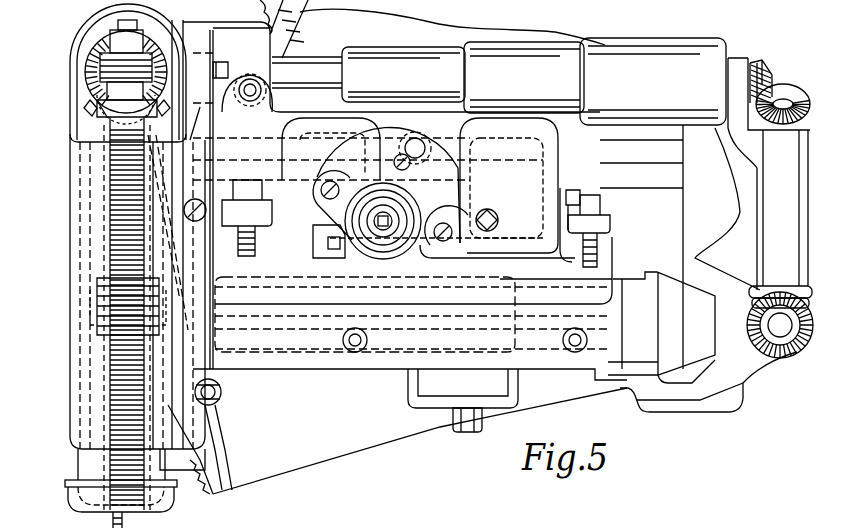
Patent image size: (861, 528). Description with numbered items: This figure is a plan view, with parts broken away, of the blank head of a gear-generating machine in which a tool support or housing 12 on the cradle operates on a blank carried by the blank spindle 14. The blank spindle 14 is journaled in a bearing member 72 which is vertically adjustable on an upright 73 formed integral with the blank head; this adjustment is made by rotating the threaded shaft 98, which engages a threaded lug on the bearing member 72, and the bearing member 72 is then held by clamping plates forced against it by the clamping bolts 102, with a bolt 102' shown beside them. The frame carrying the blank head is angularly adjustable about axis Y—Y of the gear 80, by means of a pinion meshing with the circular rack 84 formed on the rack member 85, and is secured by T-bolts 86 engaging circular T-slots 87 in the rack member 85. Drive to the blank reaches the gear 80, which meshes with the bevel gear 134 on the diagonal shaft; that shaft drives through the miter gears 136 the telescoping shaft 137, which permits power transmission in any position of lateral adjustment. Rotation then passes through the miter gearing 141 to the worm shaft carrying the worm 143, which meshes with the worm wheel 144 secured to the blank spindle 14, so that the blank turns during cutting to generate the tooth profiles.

The tool support or housing 12 is at (674, 237).
The blank spindle 14 is at (283, 314).
The bearing member 72 is at (603, 272).
The upright 73 is at (567, 202).
The gear 80 is at (787, 362).
The circular rack 84 is at (206, 491).
The rack member 85 is at (226, 480).
The T-bolts 86 is at (222, 394).
The circular T-slots 87 is at (222, 468).
The shaft 98 is at (345, 527).
The clamping bolts 102 is at (610, 214).
The bolt shank 102' is at (615, 228).
The bevel gear 134 is at (760, 303).
The miter gears 136 is at (773, 88).
The telescoping shaft 137 is at (326, 68).
The miter gearing 141 is at (96, 63).
The worm 143 is at (105, 290).
The worm wheel 144 is at (118, 400).